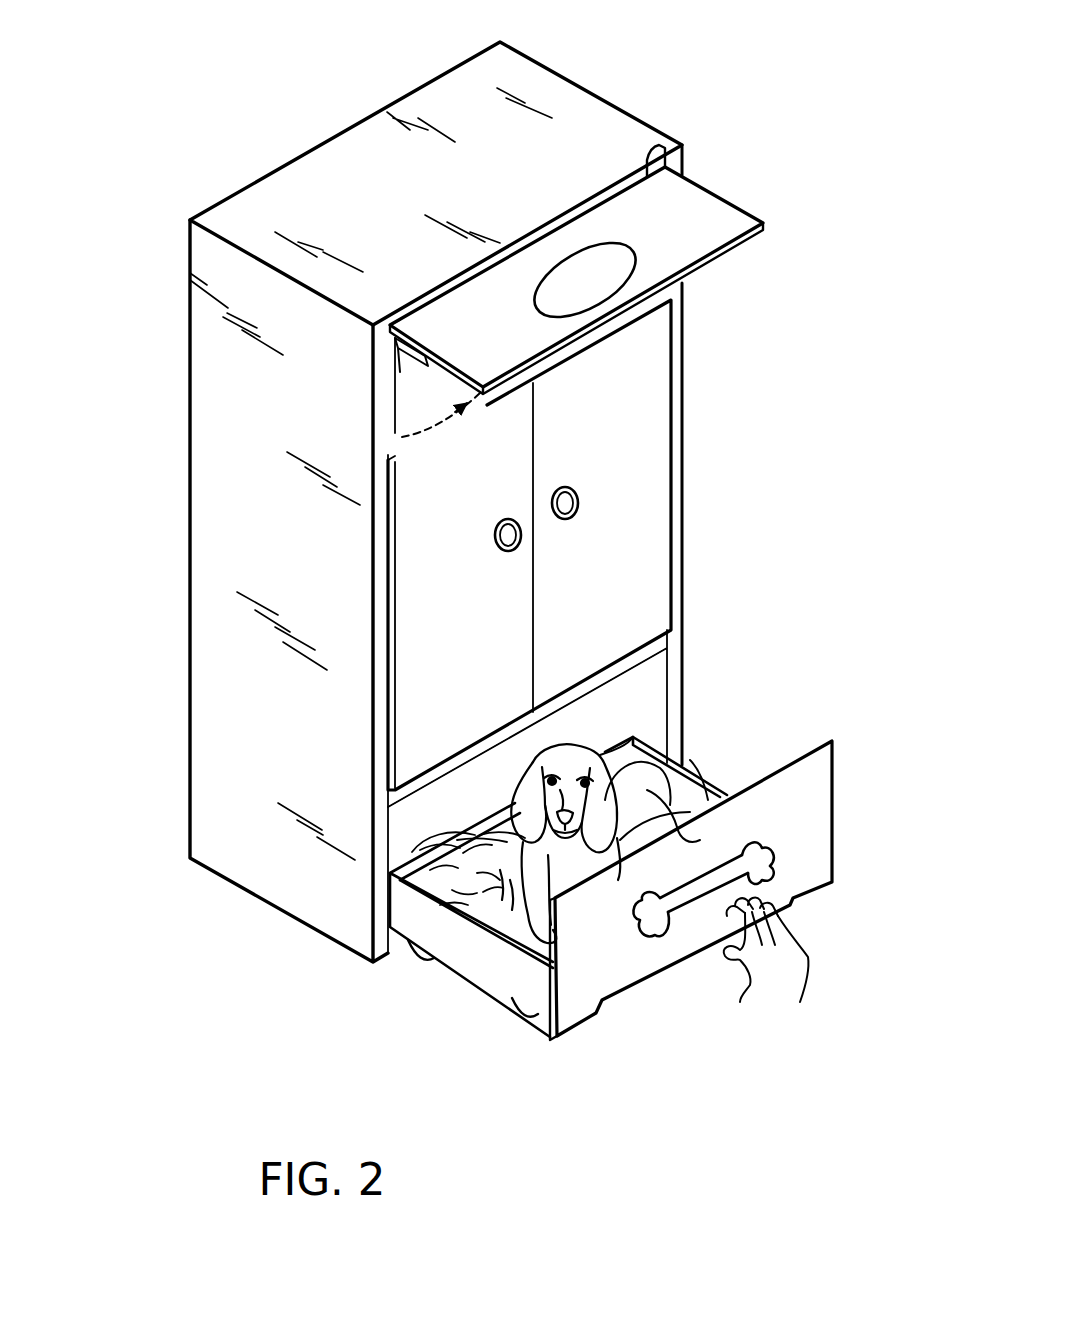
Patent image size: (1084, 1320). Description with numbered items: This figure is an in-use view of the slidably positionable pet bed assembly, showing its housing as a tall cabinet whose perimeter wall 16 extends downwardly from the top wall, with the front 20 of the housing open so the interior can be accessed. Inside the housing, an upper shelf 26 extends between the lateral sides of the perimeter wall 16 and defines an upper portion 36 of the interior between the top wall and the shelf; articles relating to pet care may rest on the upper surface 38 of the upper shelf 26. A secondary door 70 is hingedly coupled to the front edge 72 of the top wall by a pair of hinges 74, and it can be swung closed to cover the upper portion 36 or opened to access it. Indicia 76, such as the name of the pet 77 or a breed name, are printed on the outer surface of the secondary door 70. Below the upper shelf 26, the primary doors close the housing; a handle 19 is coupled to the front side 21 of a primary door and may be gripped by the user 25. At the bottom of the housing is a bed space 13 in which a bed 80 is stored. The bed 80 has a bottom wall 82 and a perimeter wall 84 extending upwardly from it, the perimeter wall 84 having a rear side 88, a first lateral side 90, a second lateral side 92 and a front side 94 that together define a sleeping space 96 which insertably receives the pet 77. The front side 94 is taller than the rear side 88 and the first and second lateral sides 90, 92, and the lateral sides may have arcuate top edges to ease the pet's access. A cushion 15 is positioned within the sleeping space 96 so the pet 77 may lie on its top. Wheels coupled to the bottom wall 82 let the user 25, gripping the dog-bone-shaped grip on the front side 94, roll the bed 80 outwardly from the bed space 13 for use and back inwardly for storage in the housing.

The bed space 13 is at (633, 697).
The cushion 15 is at (487, 907).
The perimeter wall 16 is at (212, 632).
The handle 19 is at (580, 503).
The front 20 is at (700, 528).
The front side 21 is at (650, 350).
The user 25 is at (755, 968).
The upper shelf 26 is at (658, 290).
The upper portion 36 is at (386, 390).
The upper surface 38 is at (425, 412).
The secondary door 70 is at (712, 224).
The front edge 72 is at (667, 142).
The hinges 74 is at (375, 332).
The indicia 76 is at (588, 250).
The pet 77 is at (712, 765).
The bed 80 is at (587, 902).
The bottom wall 82 is at (512, 990).
The perimeter wall 84 is at (836, 742).
The rear side 88 is at (432, 875).
The first lateral side 90 is at (655, 780).
The second lateral side 92 is at (450, 940).
The front side 94 is at (810, 846).
The sleeping space 96 is at (668, 765).